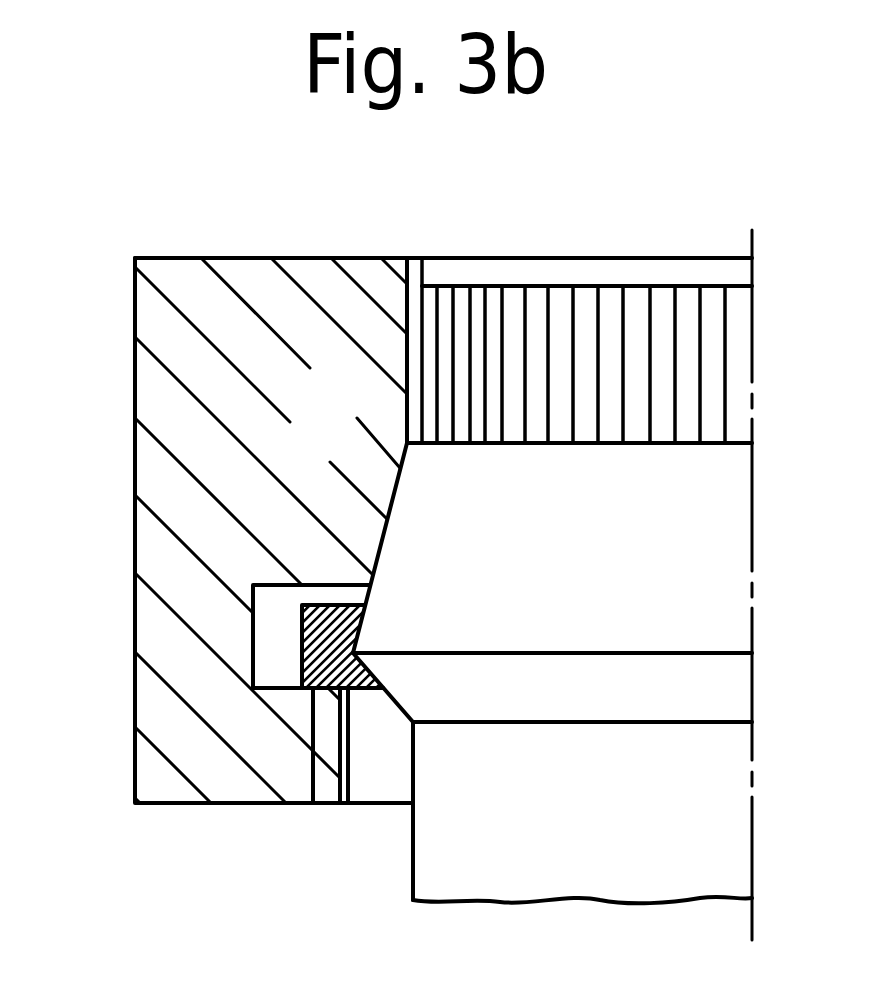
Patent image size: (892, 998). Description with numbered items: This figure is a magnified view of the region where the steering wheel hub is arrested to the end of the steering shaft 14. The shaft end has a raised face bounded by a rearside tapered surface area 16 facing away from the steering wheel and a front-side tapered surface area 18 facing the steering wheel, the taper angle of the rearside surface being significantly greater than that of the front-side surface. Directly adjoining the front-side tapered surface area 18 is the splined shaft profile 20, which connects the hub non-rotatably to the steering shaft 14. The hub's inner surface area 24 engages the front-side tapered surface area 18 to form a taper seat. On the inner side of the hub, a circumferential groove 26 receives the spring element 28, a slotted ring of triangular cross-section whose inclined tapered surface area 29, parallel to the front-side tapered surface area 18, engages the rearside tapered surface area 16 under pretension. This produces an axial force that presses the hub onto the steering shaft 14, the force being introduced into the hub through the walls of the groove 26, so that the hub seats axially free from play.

The steering shaft 14 is at (638, 850).
The rearside tapered surface area 16 is at (697, 683).
The front-side tapered surface area 18 is at (707, 517).
The splined shaft profile 20 is at (610, 303).
The inner surface area 24 is at (396, 492).
The circumferential groove 26 is at (270, 605).
The spring element 28 is at (313, 795).
The tapered surface area 29 is at (345, 623).